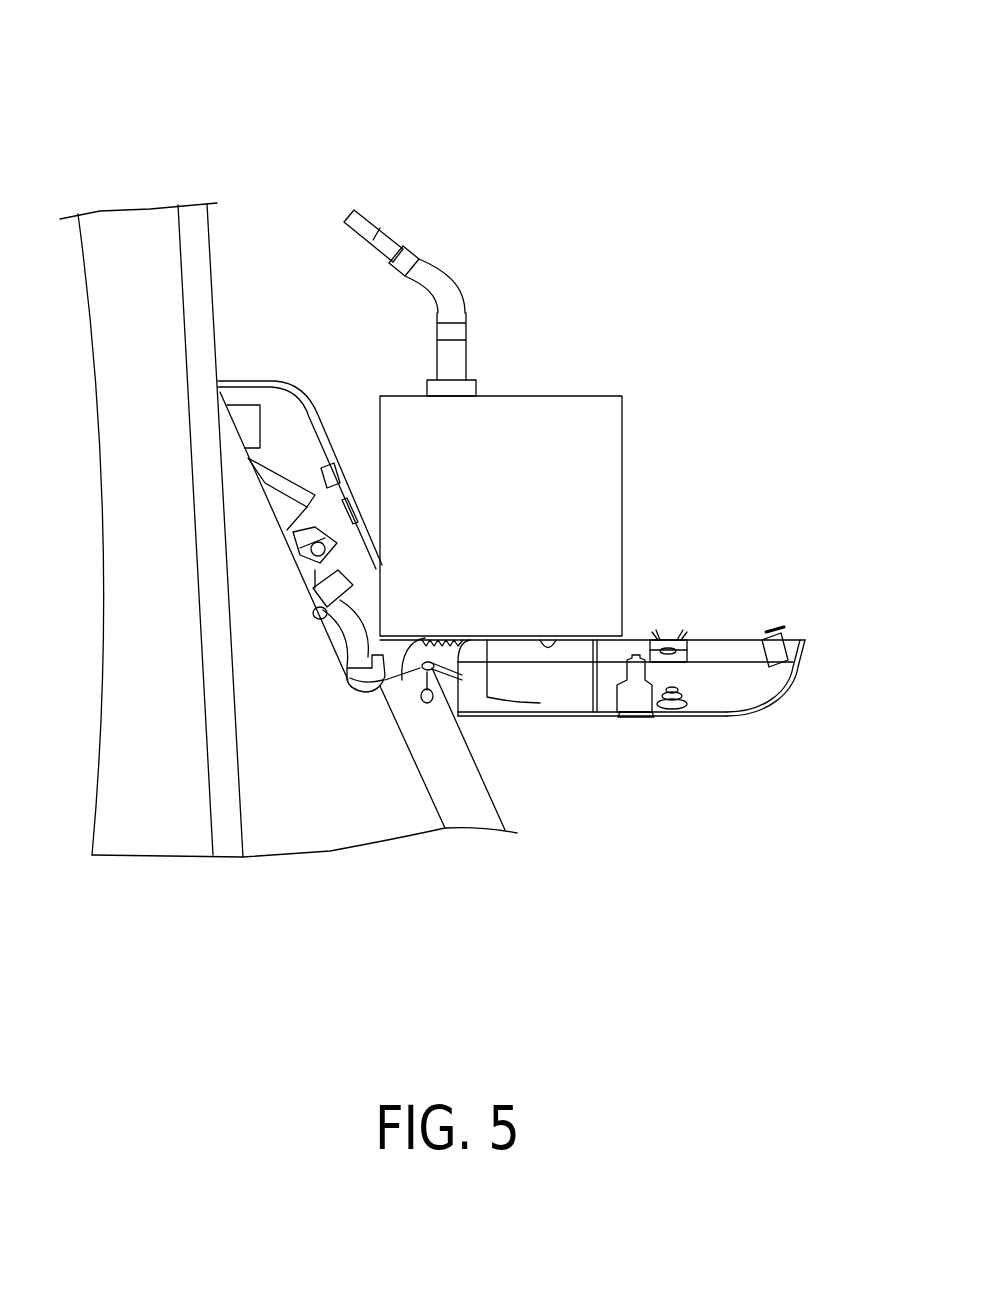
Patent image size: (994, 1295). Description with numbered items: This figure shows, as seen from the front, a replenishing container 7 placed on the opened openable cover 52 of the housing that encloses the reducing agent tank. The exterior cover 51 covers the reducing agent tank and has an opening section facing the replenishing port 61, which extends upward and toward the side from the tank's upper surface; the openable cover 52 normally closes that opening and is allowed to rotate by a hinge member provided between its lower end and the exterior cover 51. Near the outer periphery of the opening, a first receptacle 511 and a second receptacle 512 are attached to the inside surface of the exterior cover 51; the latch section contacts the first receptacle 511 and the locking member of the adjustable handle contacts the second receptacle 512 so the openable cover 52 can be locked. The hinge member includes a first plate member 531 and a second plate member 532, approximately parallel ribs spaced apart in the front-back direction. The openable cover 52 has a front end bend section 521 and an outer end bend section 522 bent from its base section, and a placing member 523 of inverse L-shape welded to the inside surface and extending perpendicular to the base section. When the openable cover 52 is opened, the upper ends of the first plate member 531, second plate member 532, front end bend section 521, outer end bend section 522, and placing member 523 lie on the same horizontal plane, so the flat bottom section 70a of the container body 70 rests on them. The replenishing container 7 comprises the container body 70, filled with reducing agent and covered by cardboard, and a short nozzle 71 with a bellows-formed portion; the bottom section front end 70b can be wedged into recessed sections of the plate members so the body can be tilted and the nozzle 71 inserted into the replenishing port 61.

The replenishing container 7 is at (505, 497).
The container body 70 is at (570, 420).
The flat bottom section 70a is at (553, 640).
The bottom section front end 70b is at (347, 688).
The nozzle 71 is at (388, 205).
The exterior cover 51 is at (493, 795).
The first receptacle 511 is at (337, 447).
The second receptacle 512 is at (356, 500).
The openable cover 52 is at (599, 685).
The front end bend section 521 is at (735, 650).
The outer end bend section 522 is at (788, 695).
The placing member 523 is at (603, 717).
The first plate member 531 is at (447, 662).
The second plate member 532 is at (447, 662).
The replenishing port 61 is at (280, 487).